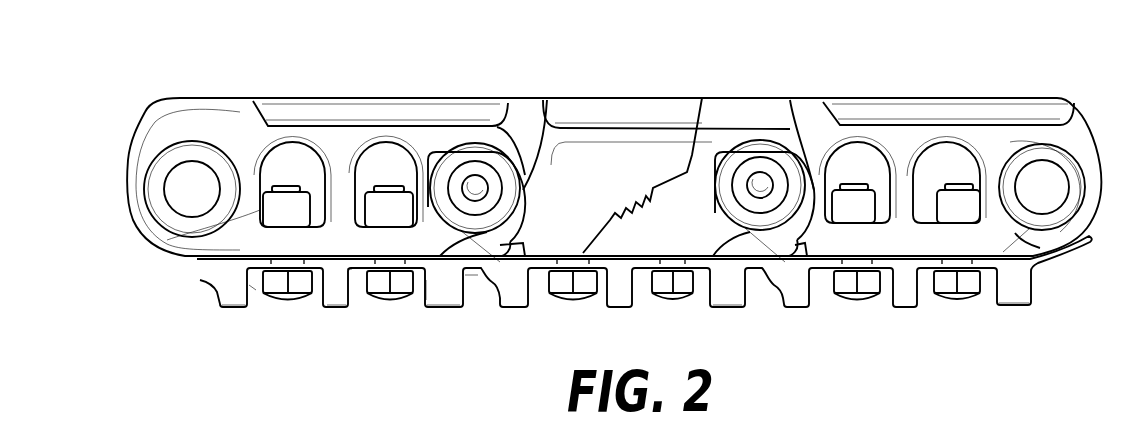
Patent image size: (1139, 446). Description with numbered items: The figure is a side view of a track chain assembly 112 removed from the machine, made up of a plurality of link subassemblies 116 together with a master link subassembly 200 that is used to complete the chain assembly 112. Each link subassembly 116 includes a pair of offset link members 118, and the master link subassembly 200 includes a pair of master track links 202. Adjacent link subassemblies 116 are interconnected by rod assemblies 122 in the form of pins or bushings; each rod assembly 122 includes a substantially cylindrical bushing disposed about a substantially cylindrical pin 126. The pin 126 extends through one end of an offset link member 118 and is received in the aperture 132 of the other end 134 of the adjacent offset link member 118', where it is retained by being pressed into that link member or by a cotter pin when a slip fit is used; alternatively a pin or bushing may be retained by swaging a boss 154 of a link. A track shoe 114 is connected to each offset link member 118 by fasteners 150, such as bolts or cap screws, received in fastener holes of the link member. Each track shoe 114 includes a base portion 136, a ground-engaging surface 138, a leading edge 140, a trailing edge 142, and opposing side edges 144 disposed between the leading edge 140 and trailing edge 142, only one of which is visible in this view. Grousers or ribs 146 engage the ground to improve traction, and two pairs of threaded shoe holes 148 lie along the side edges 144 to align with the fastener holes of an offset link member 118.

The track chain assembly 112 is at (1003, 80).
The track shoe 114 is at (447, 302).
The link subassembly 116 is at (352, 80).
The offset link member 118 is at (948, 78).
The adjacent offset link member 118' is at (364, 77).
The rod assembly 122 is at (498, 162).
The pin 126 is at (467, 170).
The aperture 132 is at (490, 215).
The other end 134 is at (548, 100).
The base portion 136 is at (350, 270).
The ground-engaging surface 138 is at (250, 286).
The leading edge 140 is at (510, 250).
The trailing edge 142 is at (200, 280).
The side edge 144 is at (426, 280).
The grouser 146 is at (223, 308).
The threaded shoe hole 148 is at (377, 257).
The fastener 150 is at (288, 310).
The boss 154 is at (483, 168).
The master link subassembly 200 is at (618, 80).
The master track link 202 is at (601, 110).